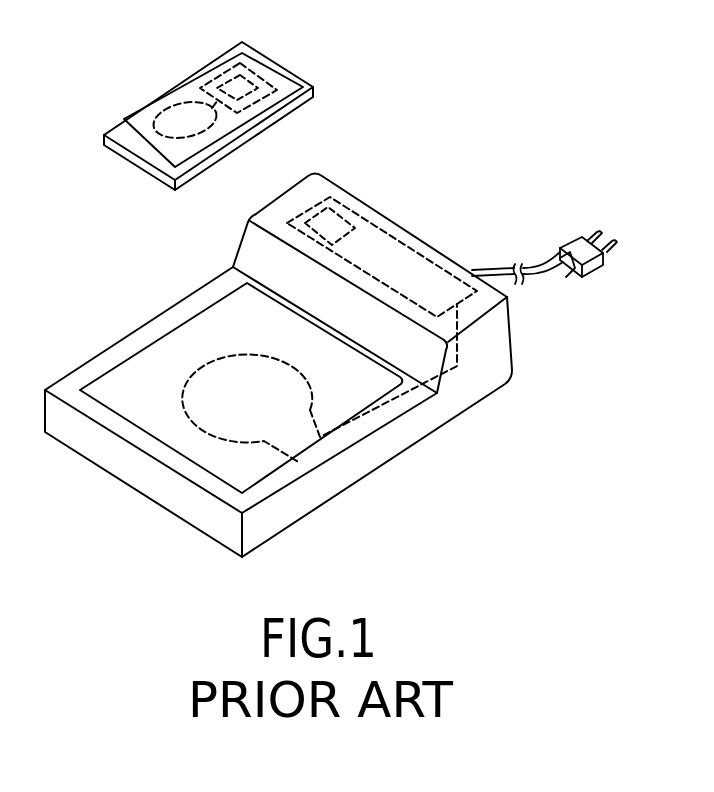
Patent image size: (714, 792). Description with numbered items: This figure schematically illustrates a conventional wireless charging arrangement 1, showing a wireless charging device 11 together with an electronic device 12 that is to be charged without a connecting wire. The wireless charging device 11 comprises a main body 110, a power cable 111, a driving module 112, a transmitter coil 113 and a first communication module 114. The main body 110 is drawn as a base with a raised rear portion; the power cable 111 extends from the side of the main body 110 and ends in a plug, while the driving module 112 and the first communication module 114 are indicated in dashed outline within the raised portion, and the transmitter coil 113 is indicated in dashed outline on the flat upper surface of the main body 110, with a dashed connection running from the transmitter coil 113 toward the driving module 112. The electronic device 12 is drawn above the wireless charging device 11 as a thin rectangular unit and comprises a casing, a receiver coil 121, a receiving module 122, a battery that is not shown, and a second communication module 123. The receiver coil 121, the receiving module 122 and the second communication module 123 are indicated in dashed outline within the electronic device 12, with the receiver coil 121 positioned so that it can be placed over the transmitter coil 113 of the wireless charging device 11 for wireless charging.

The wireless charging system (prior art) 1 is at (552, 117).
The wireless charging device 11 is at (163, 300).
The main body 110 is at (115, 353).
The power cable 111 is at (550, 280).
The driving module 112 is at (410, 250).
The transmitter coil 113 is at (190, 418).
The first communication module 114 is at (340, 223).
The electronic device 12 is at (171, 74).
The receiver coil 121 is at (162, 123).
The receiving module 122 is at (250, 73).
The second communication module 123 is at (260, 95).